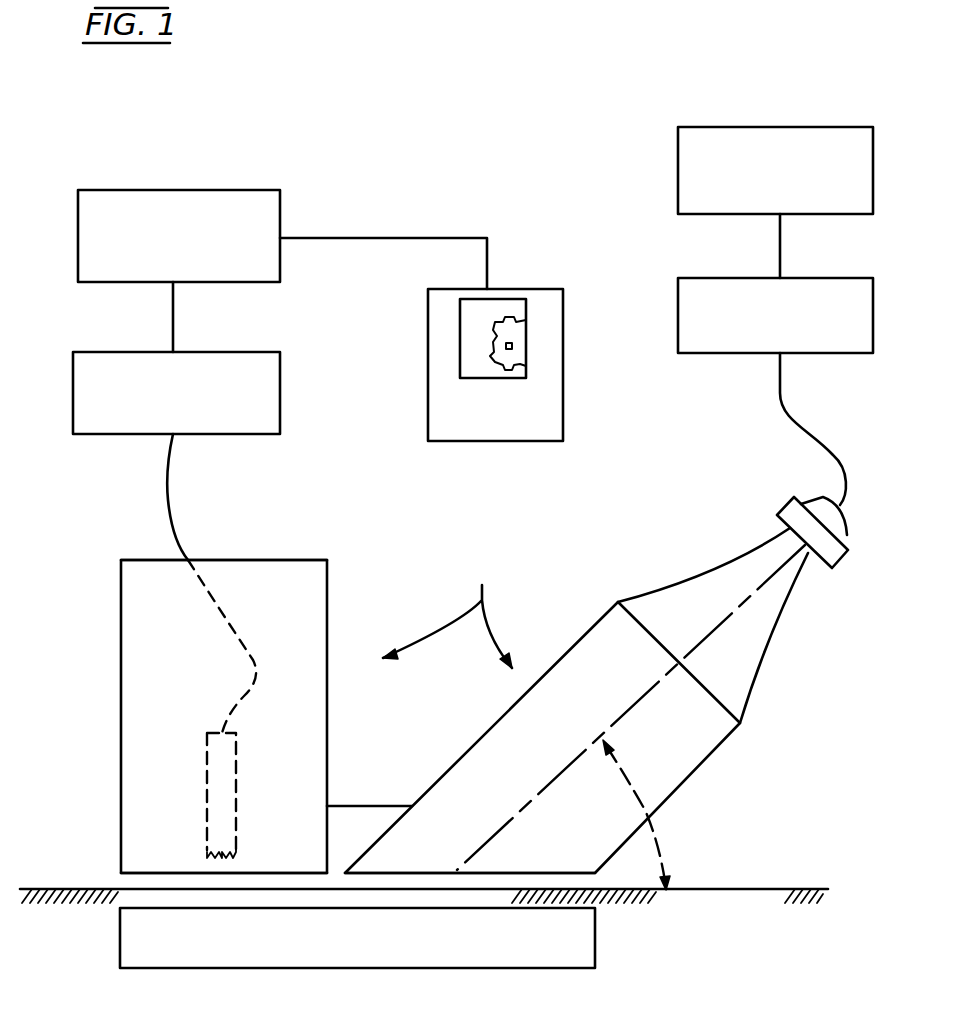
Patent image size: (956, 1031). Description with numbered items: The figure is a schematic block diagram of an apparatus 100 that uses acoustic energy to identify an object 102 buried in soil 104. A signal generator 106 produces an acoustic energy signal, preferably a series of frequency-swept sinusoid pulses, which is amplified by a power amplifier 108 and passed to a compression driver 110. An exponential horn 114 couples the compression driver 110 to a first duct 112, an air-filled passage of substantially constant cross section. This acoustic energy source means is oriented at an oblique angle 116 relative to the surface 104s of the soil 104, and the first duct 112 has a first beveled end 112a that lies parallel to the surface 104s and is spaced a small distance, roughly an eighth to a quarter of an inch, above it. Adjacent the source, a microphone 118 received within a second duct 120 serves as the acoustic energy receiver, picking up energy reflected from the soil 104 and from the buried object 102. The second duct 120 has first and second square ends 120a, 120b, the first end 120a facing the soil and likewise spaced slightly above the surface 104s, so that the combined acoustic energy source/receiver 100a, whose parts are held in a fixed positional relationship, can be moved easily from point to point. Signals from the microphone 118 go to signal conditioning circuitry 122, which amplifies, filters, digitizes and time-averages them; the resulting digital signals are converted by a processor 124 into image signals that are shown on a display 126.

The apparatus 100 is at (494, 123).
The acoustic energy source/receiver 100a is at (507, 568).
The object 102 is at (595, 948).
The soil 104 is at (695, 903).
The surface of the soil 104s is at (42, 888).
The signal generator 106 is at (678, 170).
The power amplifier 108 is at (678, 312).
The compression driver 110 is at (847, 517).
The first duct 112 is at (470, 747).
The first beveled end 112a is at (372, 873).
The exponential horn 114 is at (768, 632).
The oblique angle 116 is at (643, 803).
The microphone 118 is at (207, 775).
The second duct 120 is at (135, 625).
The first square end 120a is at (183, 823).
The second square end 120b is at (276, 560).
The signal conditioning circuitry 122 is at (73, 386).
The processor 124 is at (217, 190).
The display 126 is at (563, 412).